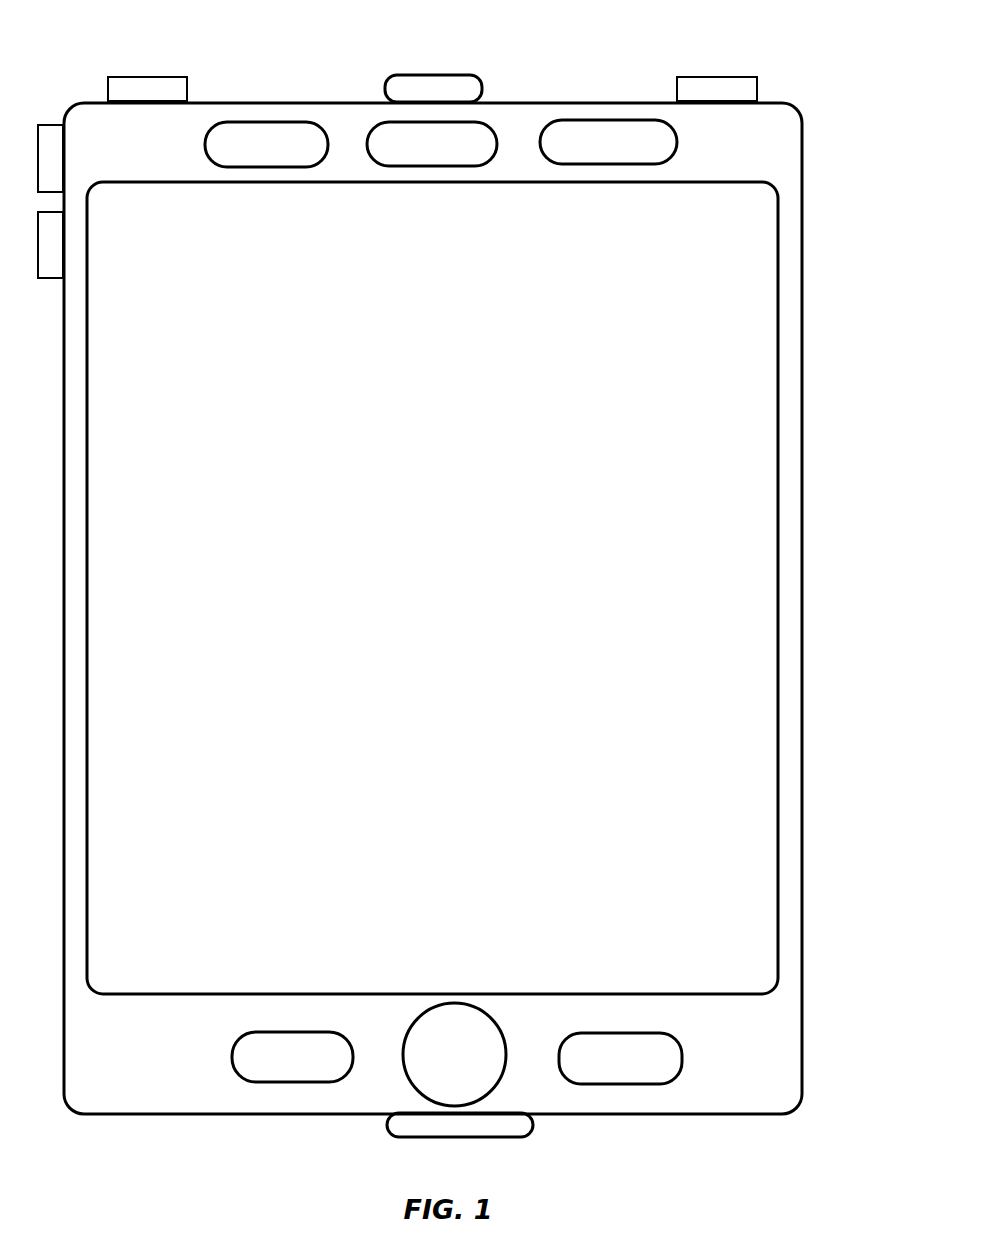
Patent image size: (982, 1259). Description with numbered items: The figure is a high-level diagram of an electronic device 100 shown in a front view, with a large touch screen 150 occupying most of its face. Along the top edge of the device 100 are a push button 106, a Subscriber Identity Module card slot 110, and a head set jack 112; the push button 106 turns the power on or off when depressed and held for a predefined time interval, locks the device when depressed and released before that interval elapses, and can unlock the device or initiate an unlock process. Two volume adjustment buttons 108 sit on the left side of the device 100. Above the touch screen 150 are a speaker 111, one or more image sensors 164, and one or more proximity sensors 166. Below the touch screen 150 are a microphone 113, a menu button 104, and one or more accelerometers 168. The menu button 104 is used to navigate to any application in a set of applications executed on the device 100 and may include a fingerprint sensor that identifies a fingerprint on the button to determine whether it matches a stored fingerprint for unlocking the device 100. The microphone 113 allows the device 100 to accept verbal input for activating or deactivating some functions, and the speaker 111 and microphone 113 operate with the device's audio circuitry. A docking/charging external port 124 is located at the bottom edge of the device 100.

The electronic device 100 is at (838, 98).
The menu button 104 is at (454, 1054).
The push button 106 is at (147, 89).
The volume adjustment buttons 108 is at (50, 201).
The Subscriber Identity Module (SIM) card slot 110 is at (433, 88).
The speaker 111 is at (266, 144).
The head set jack 112 is at (717, 89).
The microphone 113 is at (292, 1057).
The docking/charging external port 124 is at (460, 1125).
The touch screen 150 is at (782, 481).
The image sensors 164 is at (432, 144).
The proximity sensors 166 is at (608, 142).
The accelerometers 168 is at (620, 1058).